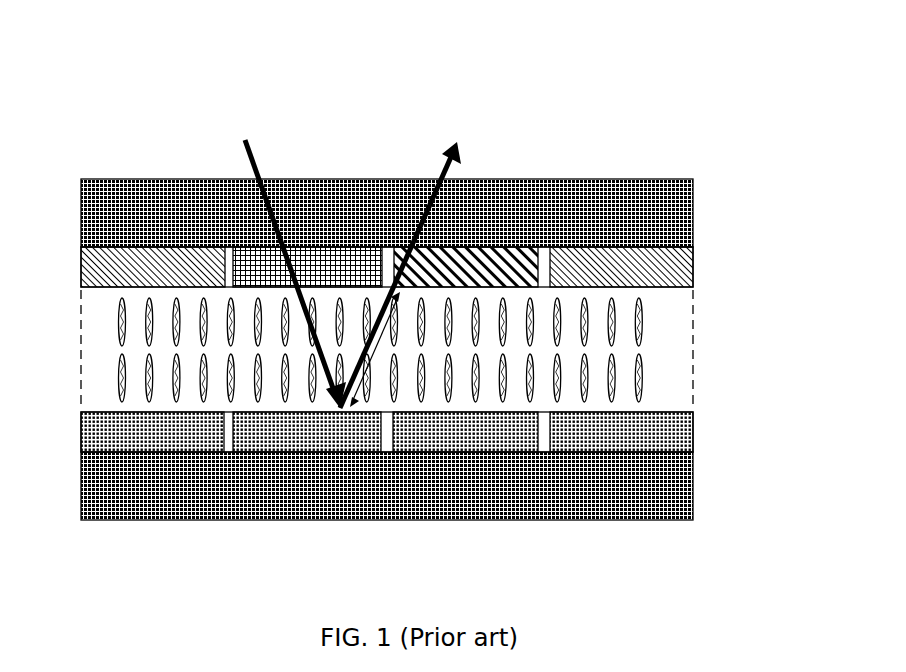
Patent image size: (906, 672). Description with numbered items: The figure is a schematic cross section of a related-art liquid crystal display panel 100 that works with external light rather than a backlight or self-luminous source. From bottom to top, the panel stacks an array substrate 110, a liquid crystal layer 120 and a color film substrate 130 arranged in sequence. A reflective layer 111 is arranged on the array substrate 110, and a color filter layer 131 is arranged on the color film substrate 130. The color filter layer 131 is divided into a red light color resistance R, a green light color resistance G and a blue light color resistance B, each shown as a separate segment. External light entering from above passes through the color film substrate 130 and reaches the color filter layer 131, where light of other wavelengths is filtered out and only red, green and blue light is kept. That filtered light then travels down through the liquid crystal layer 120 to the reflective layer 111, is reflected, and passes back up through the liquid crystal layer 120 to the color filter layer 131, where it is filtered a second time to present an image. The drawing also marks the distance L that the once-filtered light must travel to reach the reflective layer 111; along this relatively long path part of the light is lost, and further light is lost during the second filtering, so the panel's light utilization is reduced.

The liquid crystal display panel 100 is at (73, 27).
The array substrate 110 is at (693, 487).
The reflective layer 111 is at (693, 436).
The liquid crystal layer 120 is at (693, 338).
The color film substrate 130 is at (693, 210).
The color filter layer 131 is at (433, 196).
The red light color resistance R is at (103, 258).
The green light color resistance G is at (309, 270).
The blue light color resistance B is at (467, 268).
The path distance L is at (370, 358).